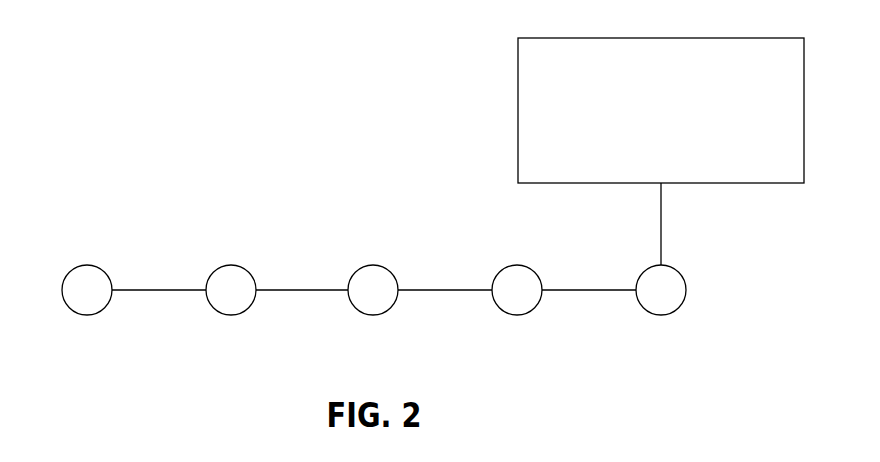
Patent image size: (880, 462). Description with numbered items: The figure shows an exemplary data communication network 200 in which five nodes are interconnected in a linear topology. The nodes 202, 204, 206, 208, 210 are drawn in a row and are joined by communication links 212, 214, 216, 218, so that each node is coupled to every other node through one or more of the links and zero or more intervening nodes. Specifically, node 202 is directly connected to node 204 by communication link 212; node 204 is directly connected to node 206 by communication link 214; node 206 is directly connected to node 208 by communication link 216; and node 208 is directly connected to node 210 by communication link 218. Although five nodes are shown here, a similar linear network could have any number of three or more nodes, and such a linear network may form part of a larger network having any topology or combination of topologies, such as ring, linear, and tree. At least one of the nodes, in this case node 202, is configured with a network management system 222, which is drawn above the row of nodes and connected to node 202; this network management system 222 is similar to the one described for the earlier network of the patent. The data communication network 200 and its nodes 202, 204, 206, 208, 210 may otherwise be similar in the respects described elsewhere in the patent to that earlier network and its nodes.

The data communication network 200 is at (80, 99).
The node 202 is at (662, 315).
The node 204 is at (518, 315).
The node 206 is at (374, 315).
The node 208 is at (232, 315).
The node 210 is at (88, 315).
The communication link 212 is at (589, 290).
The communication link 214 is at (441, 290).
The communication link 216 is at (302, 290).
The communication link 218 is at (159, 290).
The network management system 222 is at (518, 108).